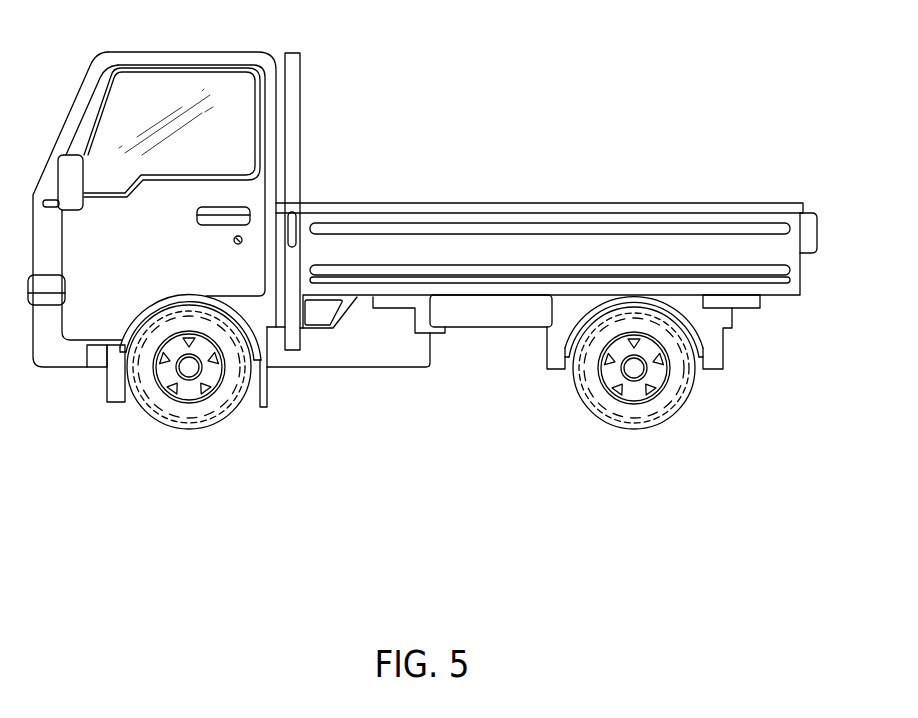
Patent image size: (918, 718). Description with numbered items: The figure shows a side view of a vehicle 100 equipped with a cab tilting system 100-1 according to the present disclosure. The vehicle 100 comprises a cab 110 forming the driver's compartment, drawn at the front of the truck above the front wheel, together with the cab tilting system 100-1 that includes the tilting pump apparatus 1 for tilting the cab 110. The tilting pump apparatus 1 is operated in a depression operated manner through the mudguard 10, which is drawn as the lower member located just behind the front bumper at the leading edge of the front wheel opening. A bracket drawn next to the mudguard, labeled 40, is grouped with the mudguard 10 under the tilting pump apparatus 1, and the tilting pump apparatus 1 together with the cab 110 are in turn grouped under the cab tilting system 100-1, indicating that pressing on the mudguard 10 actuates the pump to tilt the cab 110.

The vehicle 100 is at (422, 306).
The cab tilting system 100-1 is at (157, 332).
The tilting pump apparatus 1 is at (94, 448).
The bracket / mounting portion 40 is at (97, 358).
The mudguard 10 is at (118, 388).
The cab 110 is at (215, 265).